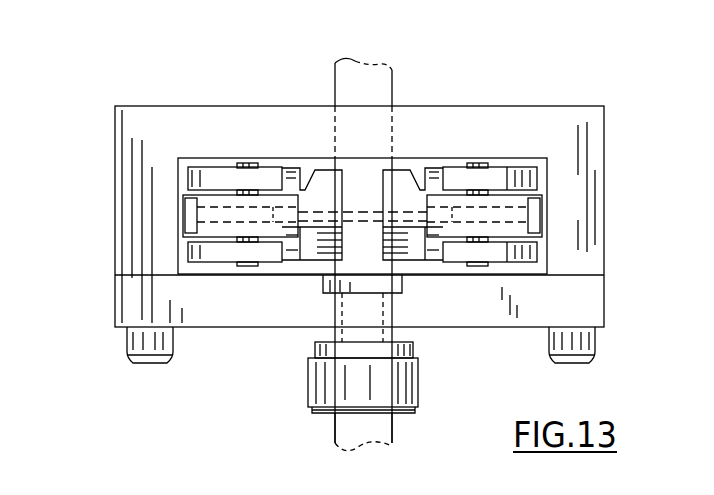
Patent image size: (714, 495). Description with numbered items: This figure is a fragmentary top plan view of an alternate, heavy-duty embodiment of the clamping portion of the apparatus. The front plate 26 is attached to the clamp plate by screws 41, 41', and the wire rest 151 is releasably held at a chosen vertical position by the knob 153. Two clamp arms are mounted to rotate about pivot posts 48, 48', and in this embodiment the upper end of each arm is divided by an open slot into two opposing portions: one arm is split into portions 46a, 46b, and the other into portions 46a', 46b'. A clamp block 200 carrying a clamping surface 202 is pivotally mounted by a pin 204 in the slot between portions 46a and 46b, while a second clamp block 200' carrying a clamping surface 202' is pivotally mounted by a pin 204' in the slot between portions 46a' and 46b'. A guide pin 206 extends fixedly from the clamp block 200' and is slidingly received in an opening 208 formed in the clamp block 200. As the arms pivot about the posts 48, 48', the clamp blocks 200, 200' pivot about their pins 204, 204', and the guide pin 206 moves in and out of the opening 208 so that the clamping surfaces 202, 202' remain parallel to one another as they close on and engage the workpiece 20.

The front plate 26 is at (125, 162).
The screw 41 is at (111, 363).
The screw 41' is at (603, 356).
The portion of arm 46 46a is at (207, 130).
The portion of arm 46' 46a' is at (490, 129).
The portion of arm 46 46b is at (235, 306).
The portion of arm 46' 46b' is at (490, 307).
The pivot post 48 is at (332, 293).
The pivot post 48' is at (419, 294).
The wire rest 151 is at (330, 292).
The knob 153 is at (315, 407).
The workpiece 20 is at (392, 450).
The clamp block 200 is at (155, 214).
The clamp block 200' is at (553, 213).
The clamping surface 202 is at (306, 164).
The clamping surface 202' is at (418, 158).
The pin 204 is at (228, 152).
The pin 204' is at (548, 156).
The guide pin 206 is at (362, 207).
The opening 208 is at (240, 214).